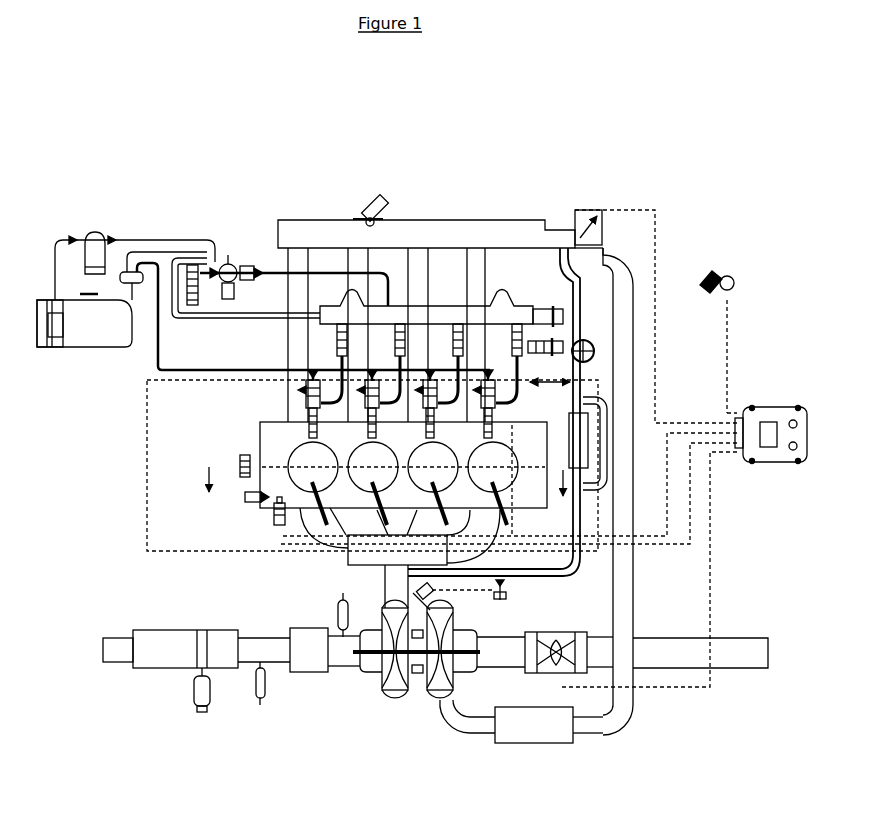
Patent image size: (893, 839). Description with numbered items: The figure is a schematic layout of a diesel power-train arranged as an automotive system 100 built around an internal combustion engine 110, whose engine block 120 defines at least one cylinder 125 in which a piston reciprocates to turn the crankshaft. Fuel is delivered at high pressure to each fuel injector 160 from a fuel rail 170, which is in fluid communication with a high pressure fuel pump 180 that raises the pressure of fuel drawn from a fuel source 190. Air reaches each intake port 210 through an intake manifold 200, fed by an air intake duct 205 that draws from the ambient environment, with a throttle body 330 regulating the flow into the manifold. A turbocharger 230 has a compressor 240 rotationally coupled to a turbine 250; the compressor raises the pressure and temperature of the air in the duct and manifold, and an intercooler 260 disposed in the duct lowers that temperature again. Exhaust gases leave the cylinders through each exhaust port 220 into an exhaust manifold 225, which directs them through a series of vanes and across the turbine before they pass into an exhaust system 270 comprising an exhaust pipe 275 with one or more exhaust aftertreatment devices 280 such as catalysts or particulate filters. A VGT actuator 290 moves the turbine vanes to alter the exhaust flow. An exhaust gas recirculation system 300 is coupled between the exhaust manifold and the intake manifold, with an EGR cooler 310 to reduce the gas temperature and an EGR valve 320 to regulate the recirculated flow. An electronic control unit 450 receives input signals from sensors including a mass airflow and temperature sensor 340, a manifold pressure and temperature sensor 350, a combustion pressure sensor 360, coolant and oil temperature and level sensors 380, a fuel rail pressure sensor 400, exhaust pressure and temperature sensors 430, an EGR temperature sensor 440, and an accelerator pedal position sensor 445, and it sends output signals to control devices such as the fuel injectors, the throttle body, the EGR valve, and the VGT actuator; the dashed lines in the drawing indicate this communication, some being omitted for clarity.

The automotive system 100 is at (200, 207).
The internal combustion engine 110 is at (500, 210).
The engine block 120 is at (262, 425).
The cylinder 125 is at (520, 437).
The fuel injector 160 is at (300, 406).
The fuel rail 170 is at (320, 316).
The high pressure fuel pump 180 is at (237, 262).
The fuel source 190 is at (98, 337).
The intake manifold 200 is at (421, 240).
The air intake duct 205 is at (627, 612).
The intake port 210 is at (293, 426).
The exhaust port 220 is at (307, 517).
The exhaust manifold 225 is at (365, 562).
The turbocharger 230 is at (390, 712).
The compressor 240 is at (442, 675).
The turbine 250 is at (383, 687).
The intercooler 260 is at (555, 730).
The exhaust system 270 is at (172, 618).
The exhaust pipe 275 is at (117, 650).
The exhaust aftertreatment device 280 is at (157, 650).
The VGT actuator 290 is at (428, 594).
The exhaust gas recirculation system 300 is at (552, 582).
The EGR cooler 310 is at (582, 455).
The EGR valve 320 is at (580, 327).
The throttle body 330 is at (589, 208).
The mass airflow and temperature sensor 340 is at (560, 670).
The manifold pressure and temperature sensor 350 is at (372, 207).
The combustion pressure sensor 360 is at (330, 530).
The coolant and oil temperature and level sensors 380 is at (263, 513).
The fuel rail pressure sensor 400 is at (580, 277).
The exhaust pressure and temperature sensors 430 is at (260, 703).
The EGR temperature sensor 440 is at (592, 368).
The accelerator pedal position sensor 445 is at (733, 283).
The electronic control unit 450 is at (775, 407).